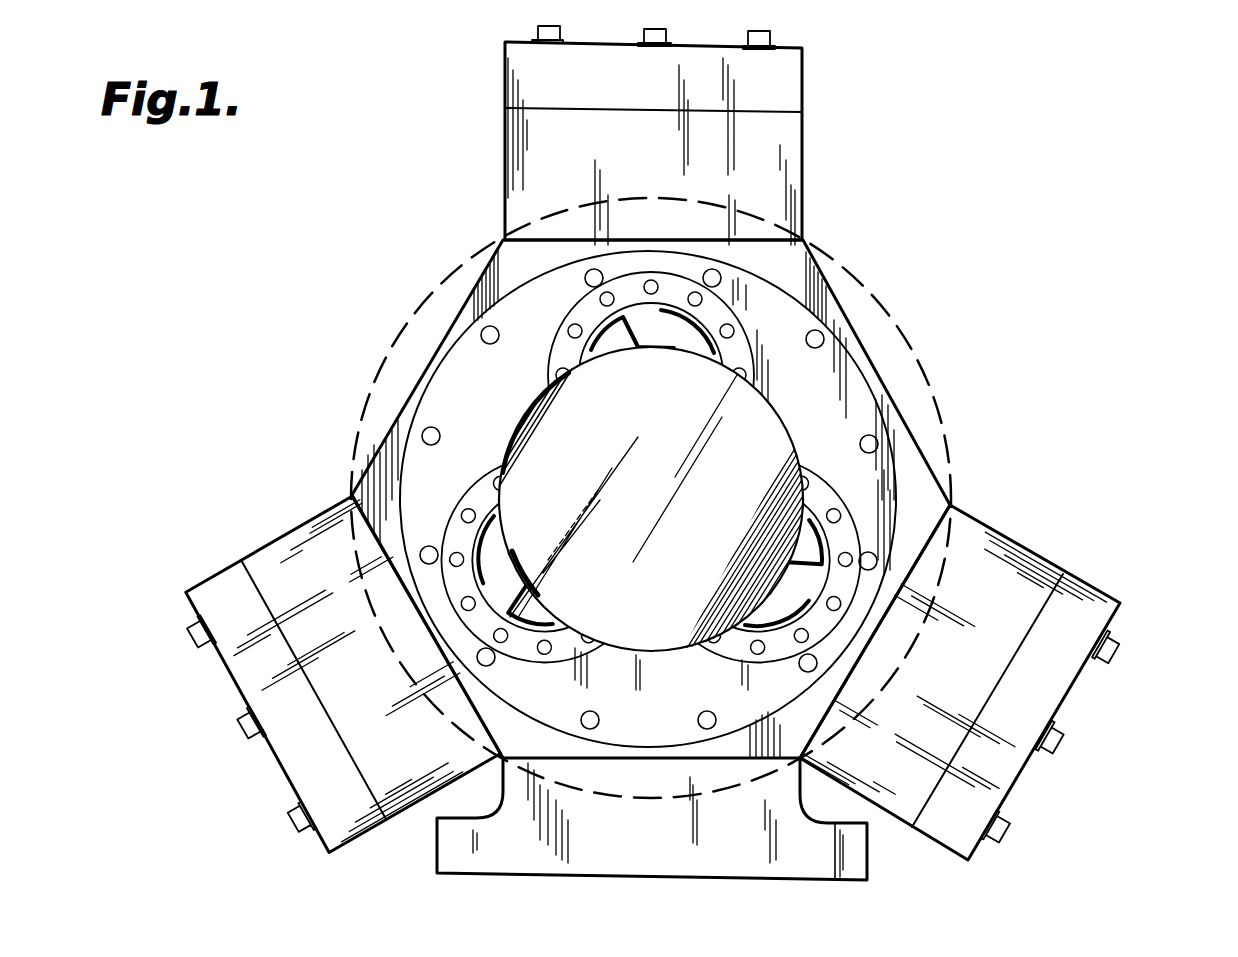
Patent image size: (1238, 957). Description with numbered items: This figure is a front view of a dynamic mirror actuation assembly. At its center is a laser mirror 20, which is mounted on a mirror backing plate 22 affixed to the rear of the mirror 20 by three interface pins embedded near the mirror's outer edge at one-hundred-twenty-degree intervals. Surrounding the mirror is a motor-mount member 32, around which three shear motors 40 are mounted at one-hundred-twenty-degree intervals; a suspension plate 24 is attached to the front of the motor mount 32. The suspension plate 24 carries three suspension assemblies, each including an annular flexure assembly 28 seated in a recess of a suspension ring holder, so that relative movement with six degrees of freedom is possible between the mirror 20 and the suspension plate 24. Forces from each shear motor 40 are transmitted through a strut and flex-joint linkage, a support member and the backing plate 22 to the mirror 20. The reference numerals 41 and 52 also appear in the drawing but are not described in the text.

The radial piston machine 20 is at (406, 321).
The rotor 22 is at (520, 433).
The housing 24 is at (860, 382).
The cylinder port 28 is at (692, 343).
The flange 32 is at (846, 317).
The cylinder block 40 is at (805, 150).
The mounting foot 41 is at (868, 852).
The cover 52 is at (808, 68).